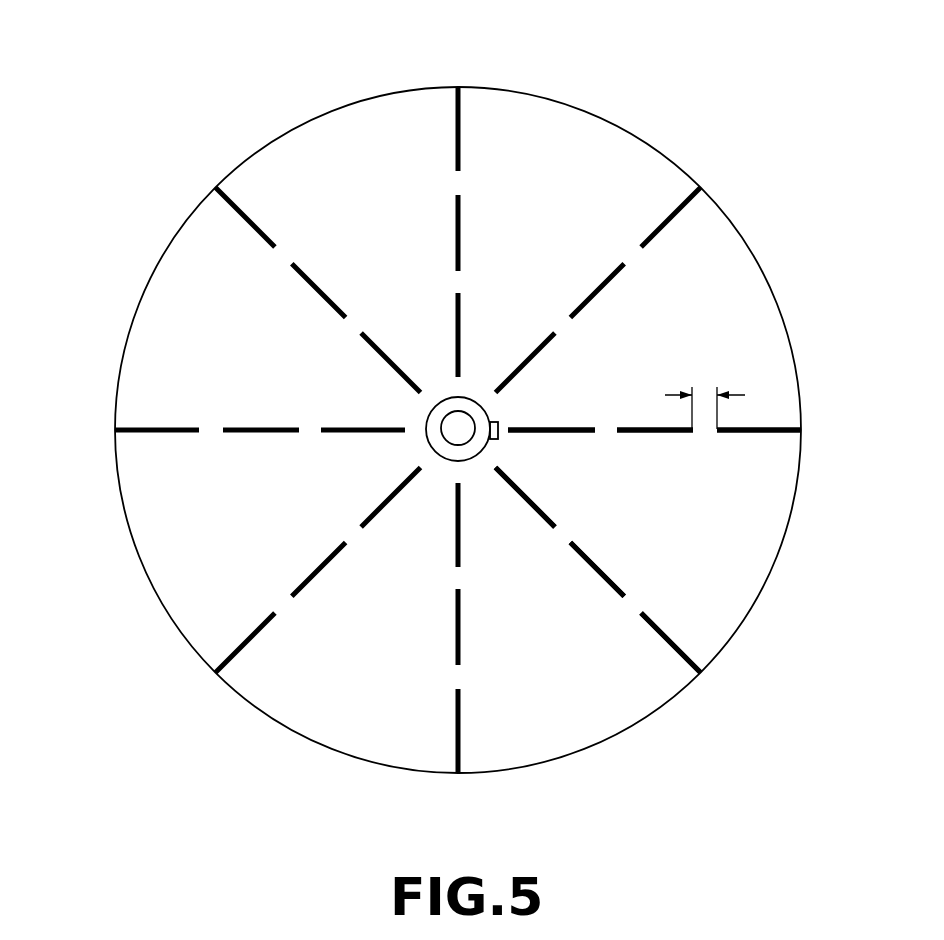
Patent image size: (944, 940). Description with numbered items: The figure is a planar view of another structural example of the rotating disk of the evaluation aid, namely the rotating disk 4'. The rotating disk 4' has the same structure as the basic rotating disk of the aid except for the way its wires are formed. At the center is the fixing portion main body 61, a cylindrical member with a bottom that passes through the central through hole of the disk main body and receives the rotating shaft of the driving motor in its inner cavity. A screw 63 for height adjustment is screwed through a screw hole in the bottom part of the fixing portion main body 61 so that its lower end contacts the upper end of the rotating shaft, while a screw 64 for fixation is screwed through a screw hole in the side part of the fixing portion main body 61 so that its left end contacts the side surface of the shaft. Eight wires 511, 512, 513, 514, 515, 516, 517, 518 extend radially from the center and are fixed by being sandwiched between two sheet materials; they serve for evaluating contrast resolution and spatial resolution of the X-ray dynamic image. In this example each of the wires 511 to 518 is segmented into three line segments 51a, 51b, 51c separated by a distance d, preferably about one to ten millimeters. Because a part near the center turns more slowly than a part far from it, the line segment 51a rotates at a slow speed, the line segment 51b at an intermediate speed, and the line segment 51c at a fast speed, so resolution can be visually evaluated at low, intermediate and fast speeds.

The rotating disk 4' is at (458, 400).
The wire 511 is at (757, 428).
The wire 512 is at (680, 646).
The wire 513 is at (460, 743).
The wire 514 is at (237, 652).
The wire 515 is at (158, 433).
The wire 516 is at (240, 217).
The wire 517 is at (457, 127).
The wire 518 is at (678, 215).
The line segment 51a is at (548, 430).
The line segment 51b is at (643, 430).
The line segment 51c is at (730, 430).
The distance between line segments d is at (703, 393).
The fixing portion main body 61 is at (447, 450).
The screw for height adjustment 63 is at (458, 428).
The screw for fixation 64 is at (498, 425).